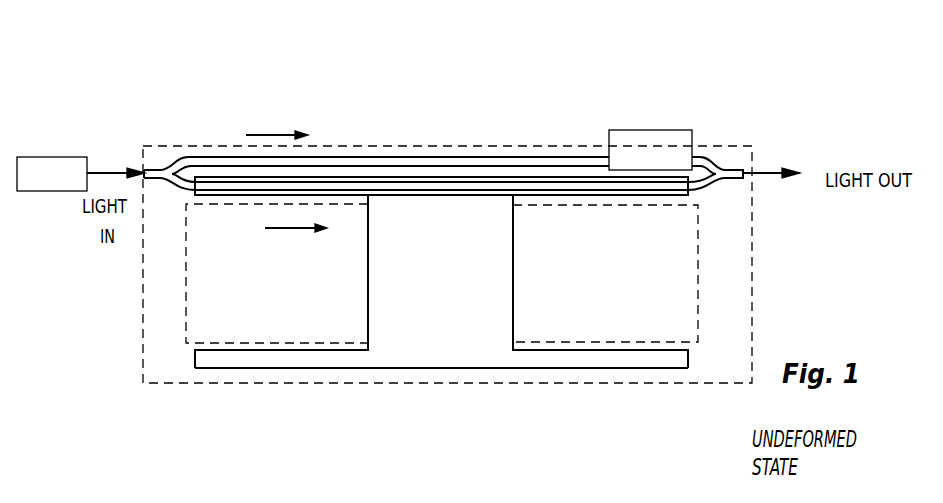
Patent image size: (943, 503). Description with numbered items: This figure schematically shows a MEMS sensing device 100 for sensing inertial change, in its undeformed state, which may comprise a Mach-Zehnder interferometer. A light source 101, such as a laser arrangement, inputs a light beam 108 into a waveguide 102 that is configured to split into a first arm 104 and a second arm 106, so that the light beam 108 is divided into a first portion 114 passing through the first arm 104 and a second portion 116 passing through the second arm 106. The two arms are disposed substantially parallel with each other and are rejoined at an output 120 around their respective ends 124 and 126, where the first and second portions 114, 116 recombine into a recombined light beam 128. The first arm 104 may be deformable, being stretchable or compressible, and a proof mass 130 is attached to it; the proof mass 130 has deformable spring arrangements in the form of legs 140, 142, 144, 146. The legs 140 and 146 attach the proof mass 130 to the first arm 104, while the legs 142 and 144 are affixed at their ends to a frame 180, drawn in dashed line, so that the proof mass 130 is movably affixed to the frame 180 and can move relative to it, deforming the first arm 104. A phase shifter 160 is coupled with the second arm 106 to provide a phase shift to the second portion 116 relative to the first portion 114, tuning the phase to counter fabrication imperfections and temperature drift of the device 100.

The sensing device 100 is at (750, 67).
The light source 101 is at (42, 190).
The waveguide 102 is at (220, 173).
The first arm 104 is at (600, 190).
The second arm 106 is at (497, 155).
The light beam 108 is at (95, 172).
The first portion 114 is at (285, 232).
The second portion 116 is at (267, 134).
The output 120 is at (735, 165).
The end of first arm 124 is at (714, 186).
The end of second arm 126 is at (698, 157).
The recombined light beam 128 is at (767, 175).
The proof mass 130 is at (418, 315).
The leg 140 is at (238, 195).
The leg 142 is at (252, 370).
The leg 144 is at (662, 368).
The leg 146 is at (555, 197).
The phase shifter 160 is at (610, 130).
The frame 180 is at (158, 347).